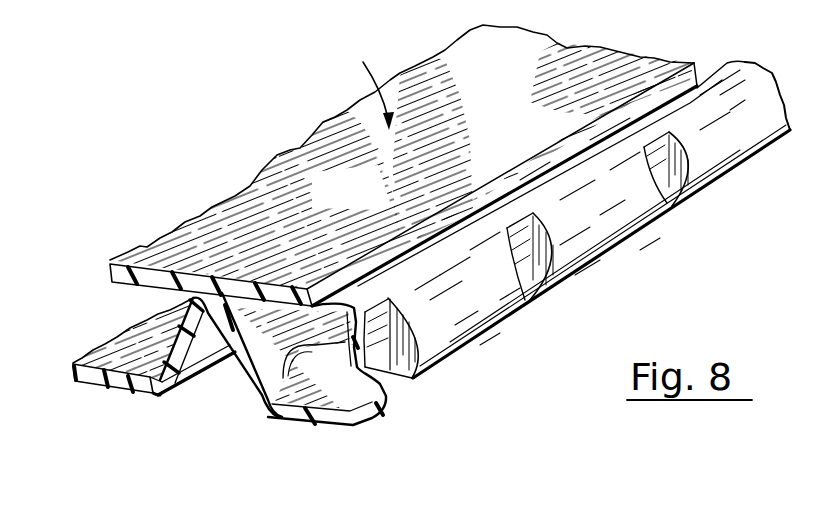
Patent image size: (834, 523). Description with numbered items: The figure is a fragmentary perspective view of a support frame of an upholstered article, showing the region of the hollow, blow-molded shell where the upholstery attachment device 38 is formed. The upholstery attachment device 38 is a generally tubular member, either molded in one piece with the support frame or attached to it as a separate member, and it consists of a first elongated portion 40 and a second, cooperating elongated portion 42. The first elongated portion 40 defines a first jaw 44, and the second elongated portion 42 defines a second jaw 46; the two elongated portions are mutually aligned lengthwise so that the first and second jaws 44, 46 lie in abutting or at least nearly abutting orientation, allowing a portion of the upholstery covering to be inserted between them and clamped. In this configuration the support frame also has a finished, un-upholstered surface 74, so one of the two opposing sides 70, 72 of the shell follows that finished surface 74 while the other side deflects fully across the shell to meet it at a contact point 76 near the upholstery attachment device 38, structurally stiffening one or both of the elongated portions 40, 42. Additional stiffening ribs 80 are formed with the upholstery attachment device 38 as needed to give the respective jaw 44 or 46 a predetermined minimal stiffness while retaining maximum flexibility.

The upholstery attachment device 38 is at (745, 138).
The first elongated portion 40 is at (278, 302).
The second elongated portion 42 is at (480, 310).
The first jaw 44 is at (401, 249).
The second jaw 46 is at (473, 213).
The side 70 is at (300, 172).
The side 72 is at (107, 392).
The finished surface 74 is at (373, 86).
The contact point 76 is at (238, 260).
The stiffening ribs 80 is at (320, 376).